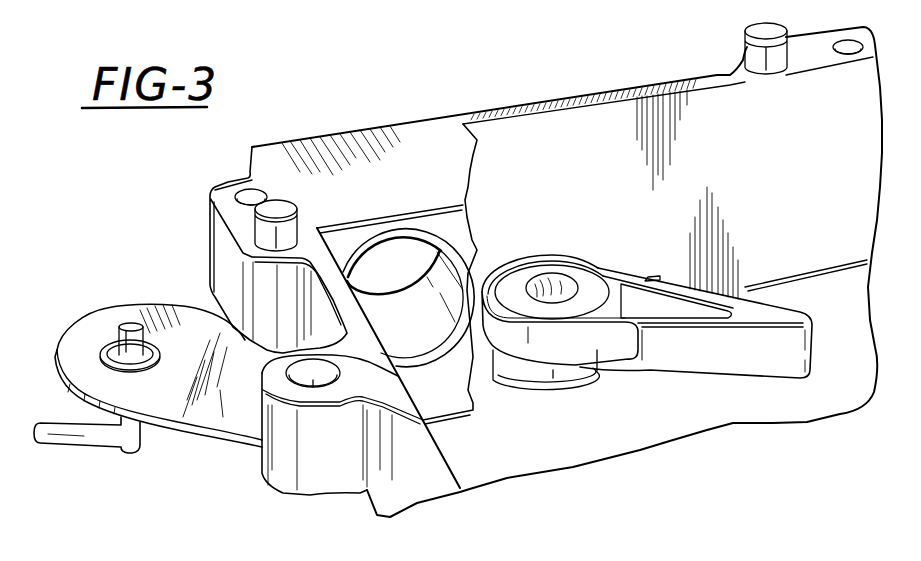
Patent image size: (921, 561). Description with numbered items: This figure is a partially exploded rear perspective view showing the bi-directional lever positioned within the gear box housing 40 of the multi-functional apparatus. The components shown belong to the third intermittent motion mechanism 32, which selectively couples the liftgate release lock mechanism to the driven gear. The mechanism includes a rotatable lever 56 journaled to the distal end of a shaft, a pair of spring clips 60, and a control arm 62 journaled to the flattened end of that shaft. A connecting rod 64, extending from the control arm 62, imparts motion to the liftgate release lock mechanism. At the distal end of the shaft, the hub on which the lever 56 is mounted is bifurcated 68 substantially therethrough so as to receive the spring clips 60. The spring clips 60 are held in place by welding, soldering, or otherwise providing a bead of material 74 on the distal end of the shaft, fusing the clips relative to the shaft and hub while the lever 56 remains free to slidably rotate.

The third intermittent motion mechanism 32 is at (567, 232).
The gear box housing 40 is at (404, 174).
The rotatable lever 56 is at (762, 312).
The spring clips 60 is at (495, 271).
The control arm 62 is at (173, 312).
The connecting rod 64 is at (138, 437).
The bifurcation 68 is at (581, 280).
The bead of material 74 is at (547, 299).